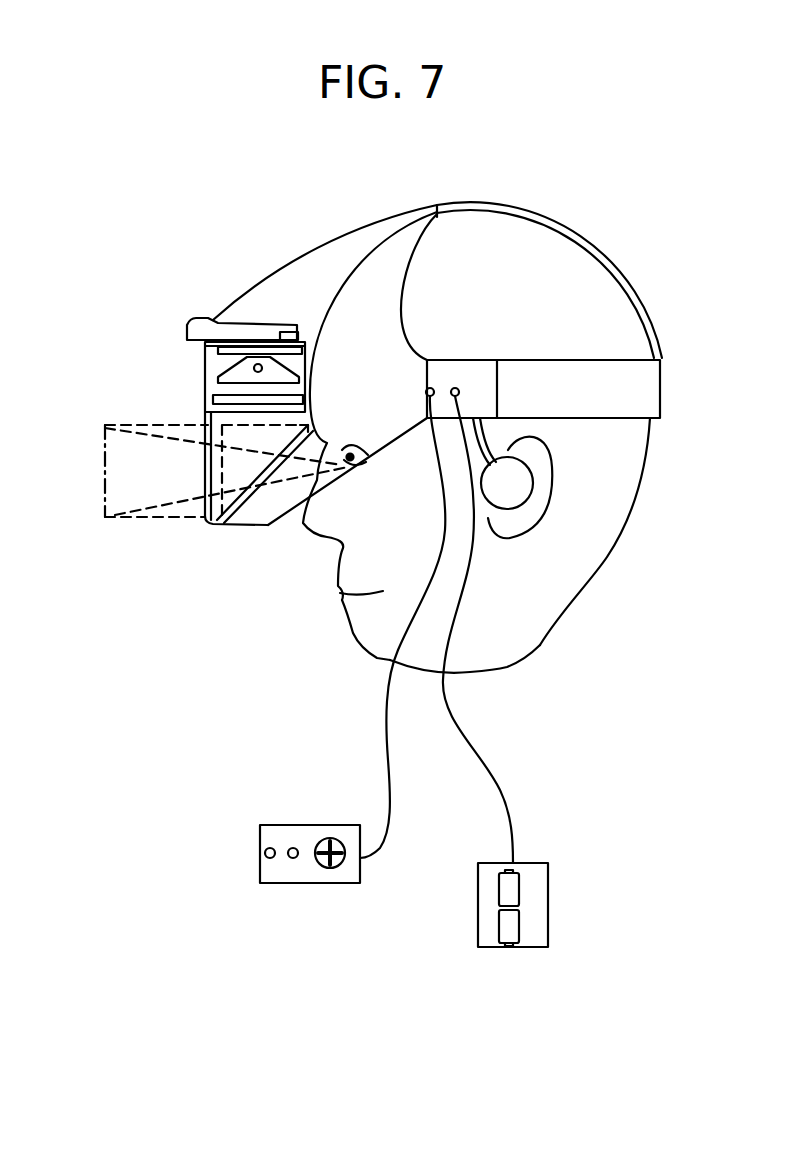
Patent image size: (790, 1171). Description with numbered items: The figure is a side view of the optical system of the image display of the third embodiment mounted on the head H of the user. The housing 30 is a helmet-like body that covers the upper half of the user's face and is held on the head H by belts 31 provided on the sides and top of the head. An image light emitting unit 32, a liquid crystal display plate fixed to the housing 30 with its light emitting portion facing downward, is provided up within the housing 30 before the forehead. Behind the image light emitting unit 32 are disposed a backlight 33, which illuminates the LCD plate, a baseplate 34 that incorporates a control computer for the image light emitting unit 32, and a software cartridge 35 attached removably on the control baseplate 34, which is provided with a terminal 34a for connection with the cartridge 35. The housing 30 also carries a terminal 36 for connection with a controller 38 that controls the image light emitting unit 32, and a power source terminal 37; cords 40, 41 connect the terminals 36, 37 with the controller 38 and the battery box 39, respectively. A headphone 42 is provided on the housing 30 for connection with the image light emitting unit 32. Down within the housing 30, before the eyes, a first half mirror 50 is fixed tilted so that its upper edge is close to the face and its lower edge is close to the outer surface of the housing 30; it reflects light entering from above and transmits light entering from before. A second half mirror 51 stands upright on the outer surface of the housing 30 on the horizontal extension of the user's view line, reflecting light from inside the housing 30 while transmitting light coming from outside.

The head of user H is at (582, 273).
The housing 30 is at (327, 247).
The belts 31 is at (473, 210).
The image light emitting unit 32 is at (220, 397).
The backlight 33 is at (230, 370).
The baseplate 34 is at (235, 347).
The terminal 34a is at (292, 337).
The software cartridge 35 is at (200, 332).
The terminal 36 is at (428, 386).
The power source terminal 37 is at (458, 386).
The controller 38 is at (297, 877).
The battery box 39 is at (535, 917).
The cord 40 is at (383, 733).
The cord 41 is at (470, 740).
The headphone 42 is at (513, 490).
The first half mirror 50 is at (223, 510).
The second half mirror 51 is at (210, 477).